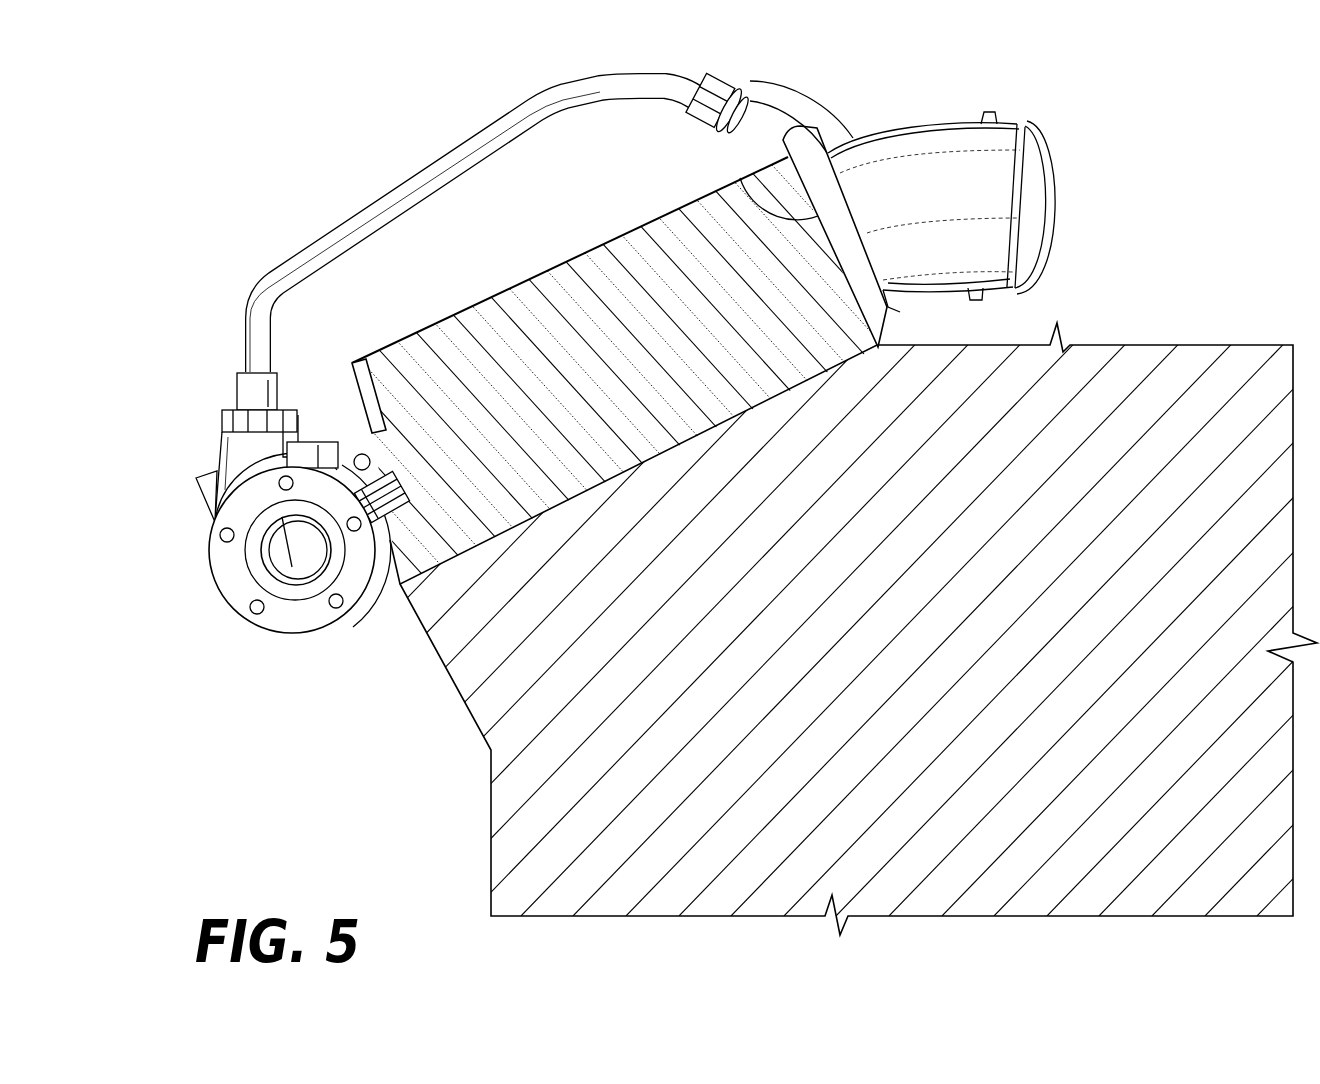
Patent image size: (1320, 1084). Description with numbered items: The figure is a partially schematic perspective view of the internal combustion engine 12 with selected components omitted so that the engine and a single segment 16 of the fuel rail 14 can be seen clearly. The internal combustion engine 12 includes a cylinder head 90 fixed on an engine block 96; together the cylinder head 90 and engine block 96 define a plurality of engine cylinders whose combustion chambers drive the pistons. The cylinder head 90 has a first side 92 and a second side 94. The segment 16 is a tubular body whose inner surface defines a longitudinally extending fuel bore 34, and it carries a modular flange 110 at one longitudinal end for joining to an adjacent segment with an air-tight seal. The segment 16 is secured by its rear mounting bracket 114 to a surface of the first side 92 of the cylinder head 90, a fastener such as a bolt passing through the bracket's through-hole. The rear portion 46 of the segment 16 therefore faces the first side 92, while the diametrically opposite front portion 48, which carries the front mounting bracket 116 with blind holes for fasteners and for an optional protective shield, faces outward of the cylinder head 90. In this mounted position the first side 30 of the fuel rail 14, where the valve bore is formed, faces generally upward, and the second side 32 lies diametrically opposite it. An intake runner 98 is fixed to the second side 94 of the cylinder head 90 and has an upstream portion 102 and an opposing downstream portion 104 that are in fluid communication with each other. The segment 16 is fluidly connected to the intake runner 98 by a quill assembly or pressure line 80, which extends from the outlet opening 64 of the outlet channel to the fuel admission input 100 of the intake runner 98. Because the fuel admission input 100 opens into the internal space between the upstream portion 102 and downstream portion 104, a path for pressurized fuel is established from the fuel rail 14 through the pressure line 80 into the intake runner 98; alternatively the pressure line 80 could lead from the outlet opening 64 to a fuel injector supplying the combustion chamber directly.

The internal combustion engine 12 is at (1097, 168).
The fuel rail 14 is at (155, 312).
The segment 16 is at (170, 522).
The first side 30 is at (203, 415).
The second side 32 is at (277, 636).
The fuel bore 34 is at (303, 533).
The rear portion 46 is at (386, 450).
The front portion 48 is at (205, 542).
The outlet opening 64 is at (247, 427).
The pressure line 80 is at (278, 258).
The cylinder head 90 is at (535, 275).
The first side 92 is at (355, 398).
The second side 94 is at (747, 185).
The engine block 96 is at (456, 692).
The intake runner 98 is at (947, 122).
The fuel admission input 100 is at (792, 92).
The upstream portion 102 is at (1054, 212).
The downstream portion 104 is at (884, 305).
The modular flange 110 is at (223, 590).
The rear mounting bracket 114 is at (378, 578).
The front mounting bracket 116 is at (198, 493).